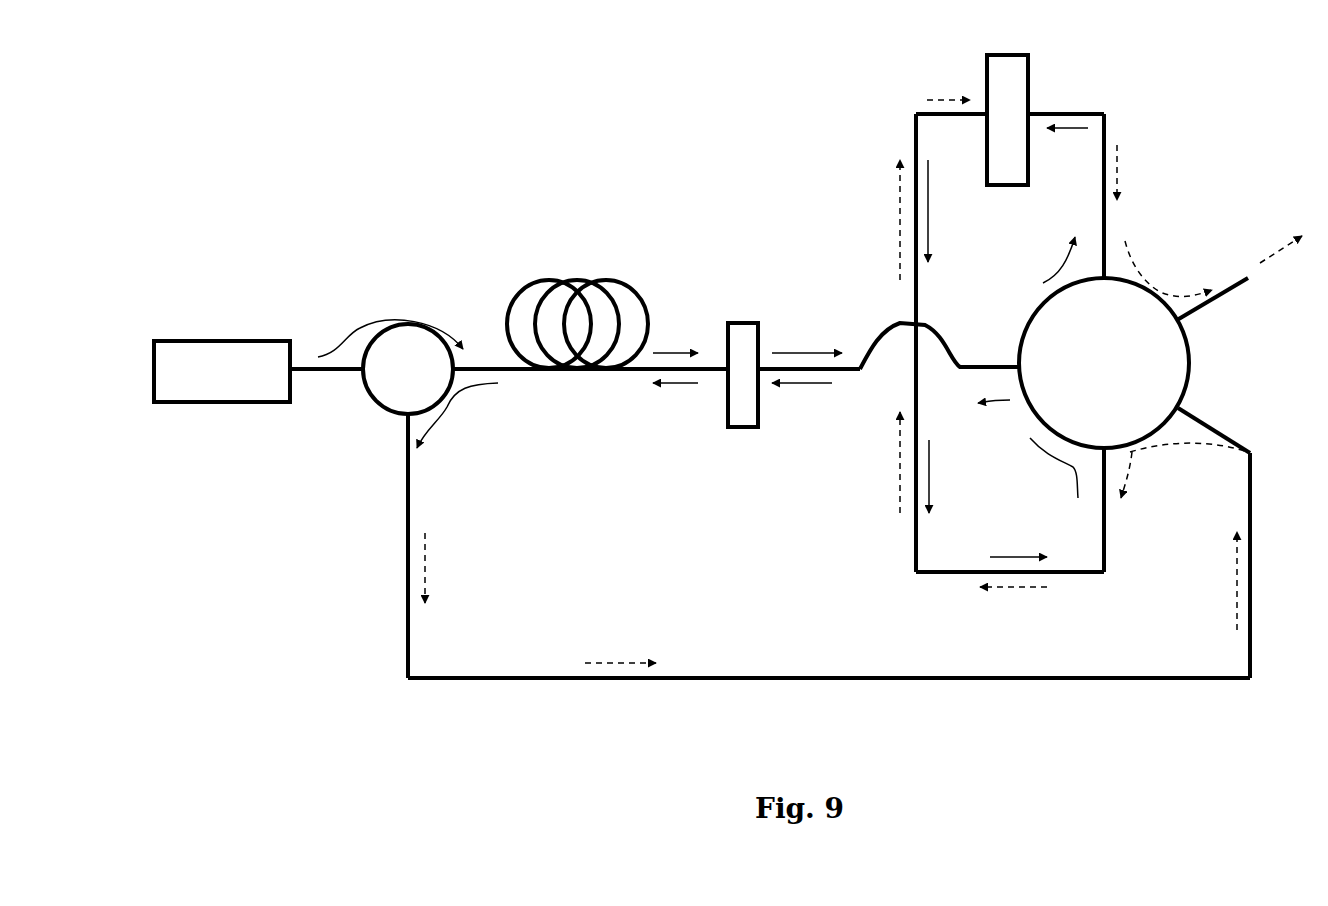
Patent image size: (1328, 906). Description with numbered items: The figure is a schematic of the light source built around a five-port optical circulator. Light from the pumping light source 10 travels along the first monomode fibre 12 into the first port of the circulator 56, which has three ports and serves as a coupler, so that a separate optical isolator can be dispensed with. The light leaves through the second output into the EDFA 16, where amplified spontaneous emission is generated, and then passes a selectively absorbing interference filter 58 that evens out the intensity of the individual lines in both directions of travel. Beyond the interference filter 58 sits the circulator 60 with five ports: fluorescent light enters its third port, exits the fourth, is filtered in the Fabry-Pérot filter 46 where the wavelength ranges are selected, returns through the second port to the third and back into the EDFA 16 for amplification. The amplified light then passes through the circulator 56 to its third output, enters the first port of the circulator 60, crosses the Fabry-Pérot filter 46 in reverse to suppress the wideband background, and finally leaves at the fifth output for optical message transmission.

The pumping light source 10 is at (222, 371).
The first monomode fibre 12 is at (312, 367).
The EDFA 16 is at (543, 370).
The Fabry-Pérot filter 46 is at (1028, 76).
The circulator 56 is at (392, 355).
The interference filter 58 is at (748, 322).
The circulator 60 is at (1132, 305).